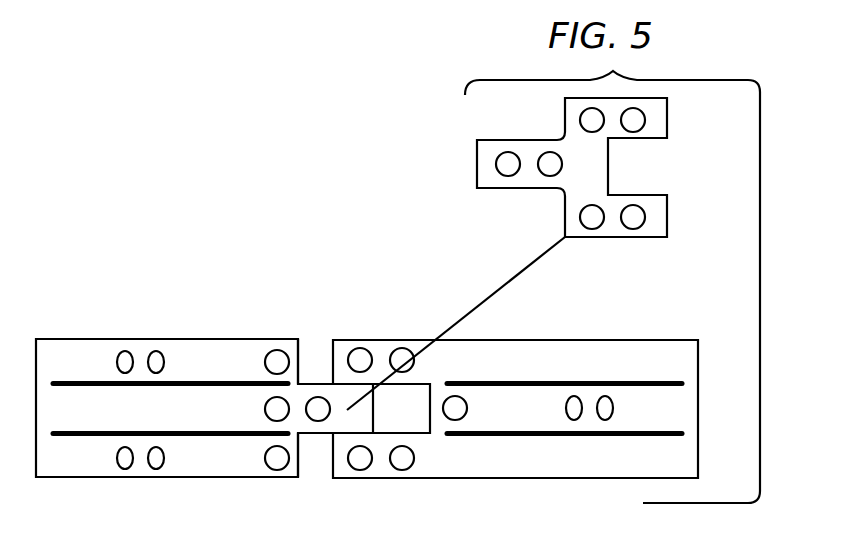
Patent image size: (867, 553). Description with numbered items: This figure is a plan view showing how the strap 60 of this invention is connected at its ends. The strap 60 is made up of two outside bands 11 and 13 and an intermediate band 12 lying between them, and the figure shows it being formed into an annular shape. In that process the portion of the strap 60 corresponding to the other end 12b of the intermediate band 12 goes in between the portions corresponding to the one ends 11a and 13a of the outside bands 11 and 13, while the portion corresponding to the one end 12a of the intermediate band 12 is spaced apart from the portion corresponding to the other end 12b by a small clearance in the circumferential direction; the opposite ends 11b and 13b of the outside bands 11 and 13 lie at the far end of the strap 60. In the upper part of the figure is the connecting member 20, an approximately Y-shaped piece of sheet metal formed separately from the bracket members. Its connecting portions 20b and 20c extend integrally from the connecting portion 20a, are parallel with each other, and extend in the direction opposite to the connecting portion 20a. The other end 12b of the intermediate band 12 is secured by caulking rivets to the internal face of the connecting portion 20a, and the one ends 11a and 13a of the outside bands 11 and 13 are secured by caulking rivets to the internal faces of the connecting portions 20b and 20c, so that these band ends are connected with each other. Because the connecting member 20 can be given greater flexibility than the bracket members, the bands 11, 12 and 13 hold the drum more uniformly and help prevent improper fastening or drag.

The connecting member 20 is at (557, 127).
The connecting portion 20a is at (473, 171).
The connecting portion 20b is at (660, 118).
The connecting portion 20c is at (660, 215).
The outside band 11 is at (216, 373).
The intermediate band 12 is at (220, 422).
The outside band 13 is at (218, 470).
The one end of outside band 11a is at (383, 347).
The other end of outside band 11b is at (262, 339).
The one end of intermediate band 12a is at (512, 403).
The other end of intermediate band 12b is at (323, 387).
The one end of outside band 13a is at (388, 468).
The other end of outside band 13b is at (295, 478).
The strap 60 is at (612, 340).